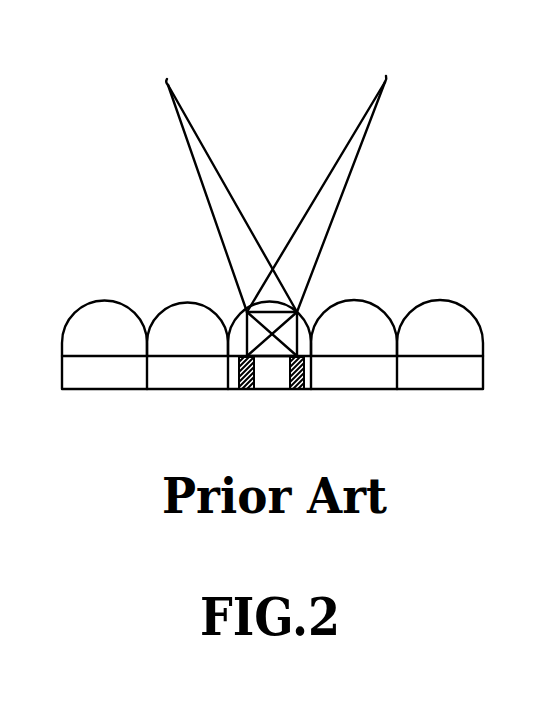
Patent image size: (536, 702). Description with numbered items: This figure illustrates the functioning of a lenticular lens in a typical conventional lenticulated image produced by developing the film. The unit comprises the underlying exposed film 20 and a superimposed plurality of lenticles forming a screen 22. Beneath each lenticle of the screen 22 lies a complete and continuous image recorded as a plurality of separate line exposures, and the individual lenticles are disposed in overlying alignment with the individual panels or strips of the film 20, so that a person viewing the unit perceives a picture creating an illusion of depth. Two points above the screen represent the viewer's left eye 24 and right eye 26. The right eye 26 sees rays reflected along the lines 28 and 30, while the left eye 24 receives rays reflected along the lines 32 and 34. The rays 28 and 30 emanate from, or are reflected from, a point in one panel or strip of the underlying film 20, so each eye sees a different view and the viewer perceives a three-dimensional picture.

The exposed film 20 is at (463, 372).
The screen 22 is at (480, 323).
The left eye 24 is at (171, 69).
The right eye 26 is at (391, 67).
The line 28 is at (337, 207).
The line 30 is at (352, 136).
The line 32 is at (197, 137).
The line 34 is at (210, 209).